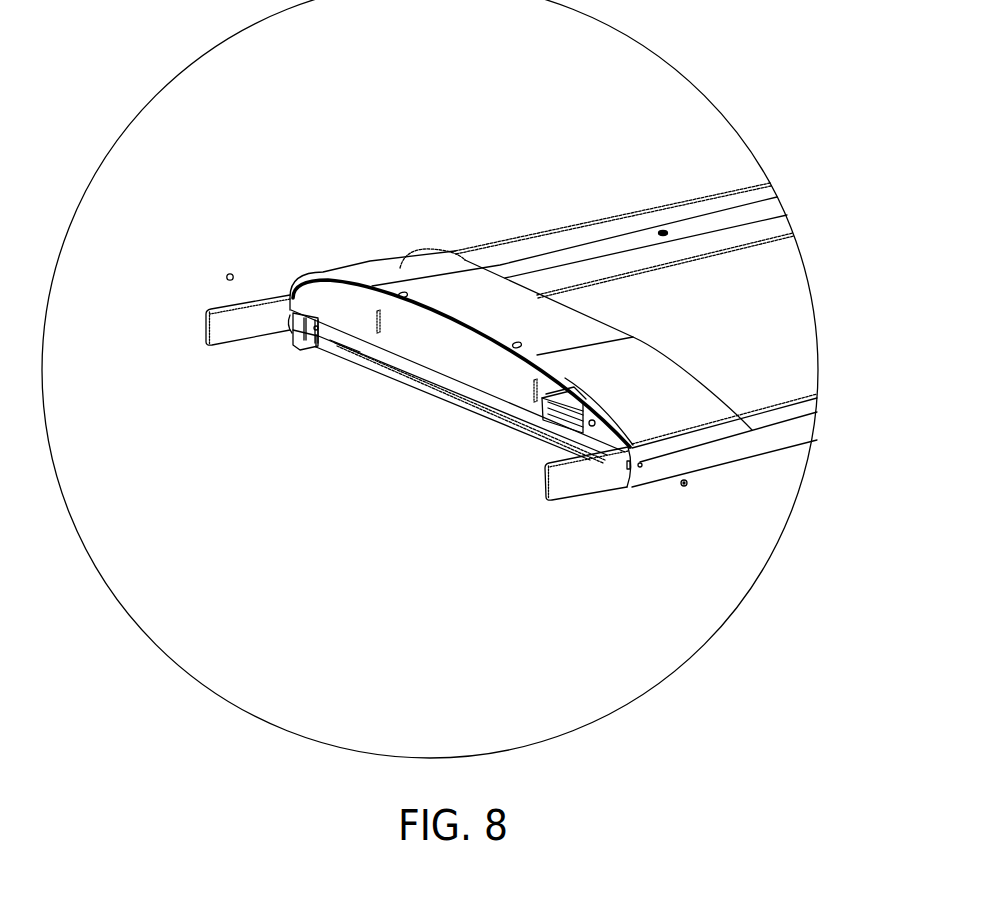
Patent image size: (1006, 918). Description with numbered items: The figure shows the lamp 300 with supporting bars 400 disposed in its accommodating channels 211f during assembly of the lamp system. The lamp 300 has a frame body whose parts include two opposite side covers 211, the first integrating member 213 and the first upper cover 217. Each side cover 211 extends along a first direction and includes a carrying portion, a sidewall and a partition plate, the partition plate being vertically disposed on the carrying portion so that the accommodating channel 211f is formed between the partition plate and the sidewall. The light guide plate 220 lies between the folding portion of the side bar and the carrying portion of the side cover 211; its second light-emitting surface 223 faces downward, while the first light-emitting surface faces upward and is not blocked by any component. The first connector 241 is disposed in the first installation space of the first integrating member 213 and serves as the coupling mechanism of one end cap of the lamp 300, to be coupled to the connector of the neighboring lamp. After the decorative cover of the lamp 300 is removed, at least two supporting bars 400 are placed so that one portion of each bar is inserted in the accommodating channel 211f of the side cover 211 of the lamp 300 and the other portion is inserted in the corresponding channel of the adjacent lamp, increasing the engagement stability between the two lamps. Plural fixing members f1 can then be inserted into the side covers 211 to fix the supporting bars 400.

The lamp 300 is at (447, 214).
The first integrating member 213 is at (313, 291).
The first upper cover 217 is at (403, 262).
The side cover 211 is at (727, 456).
The accommodating channel 211f is at (295, 340).
The supporting bar 400 is at (222, 318).
The light guide plate 220 is at (425, 378).
The second light-emitting surface 223 is at (369, 388).
The first connector 241 is at (552, 423).
The fixing member f1 is at (684, 488).